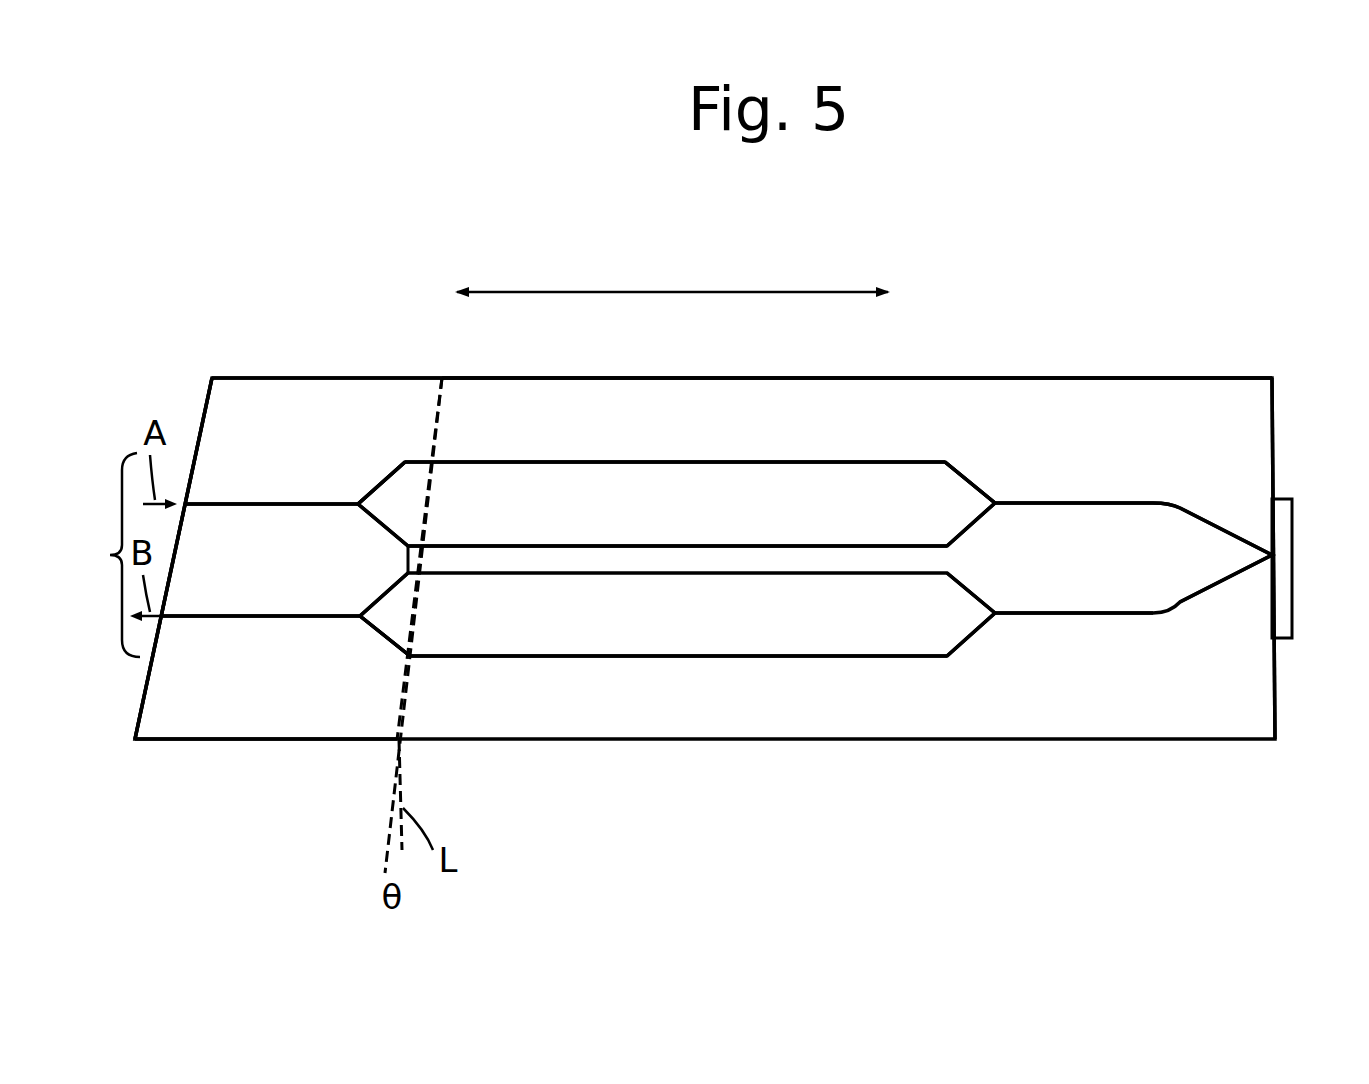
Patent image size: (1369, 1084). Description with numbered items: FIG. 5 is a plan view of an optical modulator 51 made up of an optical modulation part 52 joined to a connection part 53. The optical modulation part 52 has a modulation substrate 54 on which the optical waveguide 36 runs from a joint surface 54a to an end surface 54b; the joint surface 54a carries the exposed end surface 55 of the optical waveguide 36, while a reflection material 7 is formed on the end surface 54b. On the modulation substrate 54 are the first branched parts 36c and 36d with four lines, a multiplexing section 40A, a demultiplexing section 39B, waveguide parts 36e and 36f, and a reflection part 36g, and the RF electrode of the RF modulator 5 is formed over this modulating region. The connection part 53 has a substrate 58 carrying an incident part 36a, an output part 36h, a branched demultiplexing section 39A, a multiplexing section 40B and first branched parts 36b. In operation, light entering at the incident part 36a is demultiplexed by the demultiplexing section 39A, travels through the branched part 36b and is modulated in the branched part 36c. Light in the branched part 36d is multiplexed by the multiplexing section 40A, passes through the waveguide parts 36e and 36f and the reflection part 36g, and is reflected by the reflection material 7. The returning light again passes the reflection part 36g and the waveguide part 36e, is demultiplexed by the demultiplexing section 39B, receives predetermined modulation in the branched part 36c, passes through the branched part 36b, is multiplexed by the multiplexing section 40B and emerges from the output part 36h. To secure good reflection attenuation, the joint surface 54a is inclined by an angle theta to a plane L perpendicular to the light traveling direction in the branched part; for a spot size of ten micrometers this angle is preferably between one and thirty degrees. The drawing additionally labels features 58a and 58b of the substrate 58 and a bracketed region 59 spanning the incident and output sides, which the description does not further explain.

The RF modulator 5 is at (805, 292).
The reflection material 7 is at (1285, 622).
The optical waveguide 36 is at (332, 490).
The incident part 36a is at (265, 506).
The first branched part 36b is at (383, 468).
The first branched part 36c is at (697, 544).
The first branched part 36d is at (965, 473).
The waveguide part 36e is at (1118, 500).
The waveguide part 36f is at (1188, 510).
The reflection part 36g is at (1222, 530).
The output part 36h is at (272, 620).
The demultiplexing section 39A is at (358, 500).
The demultiplexing section 39B is at (997, 612).
The multiplexing section 40A is at (997, 503).
The multiplexing section 40B is at (362, 616).
The optical modulator 51 is at (1255, 364).
The optical modulation part 52 is at (927, 366).
The connection part 53 is at (317, 366).
The modulation substrate 54 is at (726, 390).
The joint surface 54a is at (440, 407).
The end surface 54b is at (1274, 418).
The end surface of the optical waveguide 55 is at (413, 548).
The substrate 58 is at (207, 712).
The inclined end face 58a is at (198, 412).
The boundary face 58b is at (443, 437).
The input port region 59 is at (100, 555).